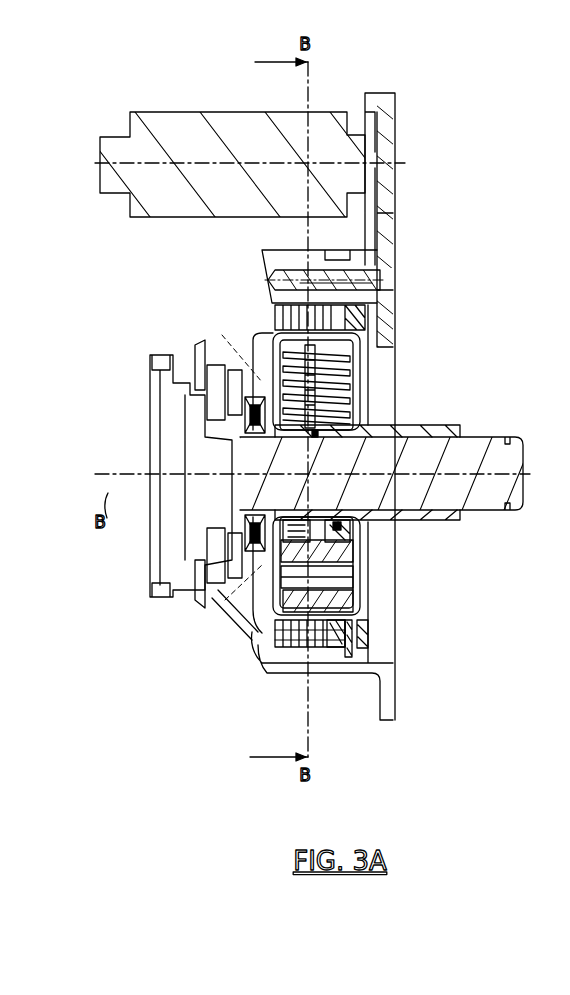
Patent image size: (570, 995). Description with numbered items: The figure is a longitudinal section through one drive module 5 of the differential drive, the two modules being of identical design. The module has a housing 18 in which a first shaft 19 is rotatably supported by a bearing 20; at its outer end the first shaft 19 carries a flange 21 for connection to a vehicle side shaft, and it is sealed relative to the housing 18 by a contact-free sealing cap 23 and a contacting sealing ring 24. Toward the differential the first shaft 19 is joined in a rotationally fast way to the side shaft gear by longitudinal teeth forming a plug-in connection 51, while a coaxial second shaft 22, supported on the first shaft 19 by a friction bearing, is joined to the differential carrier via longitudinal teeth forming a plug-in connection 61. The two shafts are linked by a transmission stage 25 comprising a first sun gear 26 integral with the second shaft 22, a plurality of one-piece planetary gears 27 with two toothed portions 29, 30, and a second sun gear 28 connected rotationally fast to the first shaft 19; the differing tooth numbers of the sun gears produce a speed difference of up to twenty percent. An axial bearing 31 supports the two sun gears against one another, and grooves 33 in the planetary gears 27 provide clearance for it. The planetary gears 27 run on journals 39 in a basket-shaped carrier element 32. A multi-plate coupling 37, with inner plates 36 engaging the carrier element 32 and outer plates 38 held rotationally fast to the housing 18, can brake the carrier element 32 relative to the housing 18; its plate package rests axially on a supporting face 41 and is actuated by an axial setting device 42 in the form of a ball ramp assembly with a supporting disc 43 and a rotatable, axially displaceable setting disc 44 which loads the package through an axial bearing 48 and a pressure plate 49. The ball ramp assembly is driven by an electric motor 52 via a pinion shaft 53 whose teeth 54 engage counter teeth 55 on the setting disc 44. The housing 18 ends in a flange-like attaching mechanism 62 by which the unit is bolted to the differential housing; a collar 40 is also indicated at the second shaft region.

The drive module 5 is at (441, 82).
The housing 18 is at (230, 348).
The first shaft 19 is at (506, 463).
The bearing 20 is at (255, 552).
The flange 21 is at (157, 596).
The second shaft 22 is at (427, 427).
The sealing cap 23 is at (192, 358).
The sealing ring 24 is at (222, 398).
The transmission stage 25 is at (372, 560).
The first sun gear 26 is at (329, 519).
The planetary gears 27 is at (350, 381).
The second sun gear 28 is at (282, 519).
The toothed portion 29 is at (340, 408).
The toothed portion 30 is at (262, 350).
The axial bearing 31 is at (316, 438).
The carrier element 32 is at (362, 362).
The grooves 33 is at (272, 330).
The inner plates 36 is at (284, 640).
The coupling 37 is at (258, 641).
The outer plates 38 is at (296, 636).
The journals 39 is at (355, 573).
The collar 40 is at (358, 551).
The supporting face 41 is at (288, 330).
The axial setting device 42 is at (355, 664).
The supporting disc 43 is at (358, 330).
The setting disc 44 is at (358, 309).
The axial bearing 48 is at (331, 648).
The pressure plate 49 is at (318, 648).
The longitudinal teeth 51 is at (497, 436).
The electric motor 52 is at (199, 116).
The pinion shaft 53 is at (372, 264).
The teeth 54 is at (350, 255).
The counter teeth 55 is at (355, 292).
The longitudinal teeth 61 is at (449, 521).
The attaching mechanism 62 is at (395, 706).